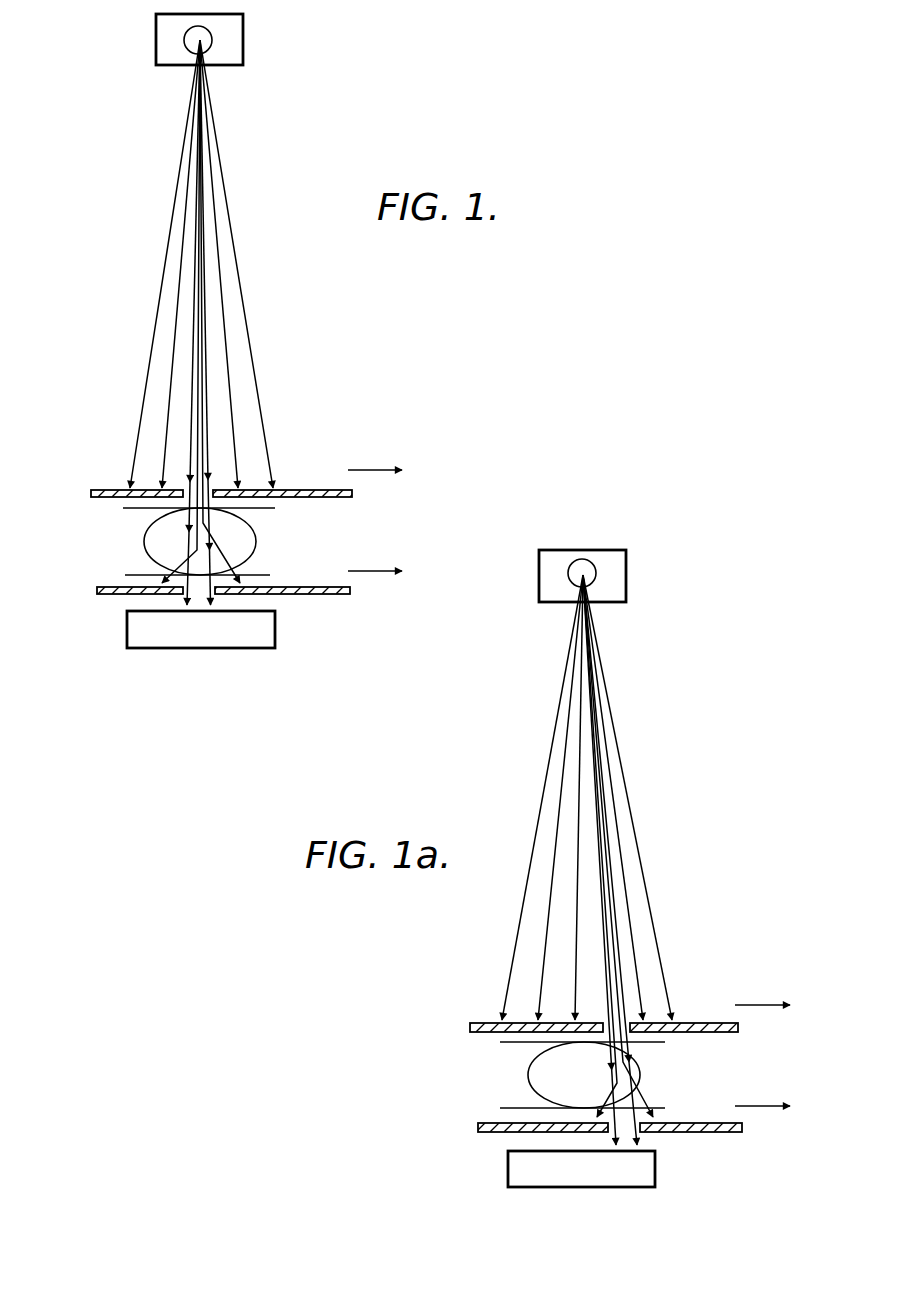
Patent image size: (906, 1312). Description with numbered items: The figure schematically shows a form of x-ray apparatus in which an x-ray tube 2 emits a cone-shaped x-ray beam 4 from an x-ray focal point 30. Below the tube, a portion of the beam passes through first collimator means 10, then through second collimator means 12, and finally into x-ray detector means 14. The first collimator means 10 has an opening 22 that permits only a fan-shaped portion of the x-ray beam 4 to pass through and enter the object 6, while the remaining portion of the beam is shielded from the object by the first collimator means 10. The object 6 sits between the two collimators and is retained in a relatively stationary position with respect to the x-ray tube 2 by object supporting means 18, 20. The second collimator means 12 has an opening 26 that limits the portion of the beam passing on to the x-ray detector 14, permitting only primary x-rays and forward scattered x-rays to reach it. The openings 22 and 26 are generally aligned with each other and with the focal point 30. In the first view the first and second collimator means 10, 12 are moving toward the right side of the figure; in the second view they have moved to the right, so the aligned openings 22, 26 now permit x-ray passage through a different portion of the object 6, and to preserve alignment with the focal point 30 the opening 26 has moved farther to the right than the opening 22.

In FIG. 1, the x-ray tube 2 is at (156, 40).
In FIG. 1a, the x-ray tube 2 is at (578, 549).
In FIG. 1, the x-ray focal point 30 is at (204, 37).
In FIG. 1a, the x-ray focal point 30 is at (588, 571).
In FIG. 1, the x-ray beam 4 is at (164, 263).
In FIG. 1a, the x-ray beam 4 is at (622, 768).
In FIG. 1, the first collimator means 10 is at (315, 488).
In FIG. 1a, the first collimator means 10 is at (717, 1020).
In FIG. 1, the opening 22 is at (206, 492).
In FIG. 1a, the opening 22 is at (625, 1020).
In FIG. 1, the object supporting means 18 is at (133, 508).
In FIG. 1a, the object supporting means 18 is at (510, 1043).
In FIG. 1, the object 6 is at (153, 543).
In FIG. 1a, the object 6 is at (547, 1082).
In FIG. 1, the object supporting means 20 is at (130, 575).
In FIG. 1a, the object supporting means 20 is at (512, 1107).
In FIG. 1, the second collimator means 12 is at (333, 596).
In FIG. 1a, the second collimator means 12 is at (707, 1133).
In FIG. 1, the x-ray detector means 14 is at (142, 638).
In FIG. 1a, the x-ray detector means 14 is at (528, 1188).
In FIG. 1, the opening 26 is at (202, 592).
In FIG. 1a, the opening 26 is at (623, 1127).